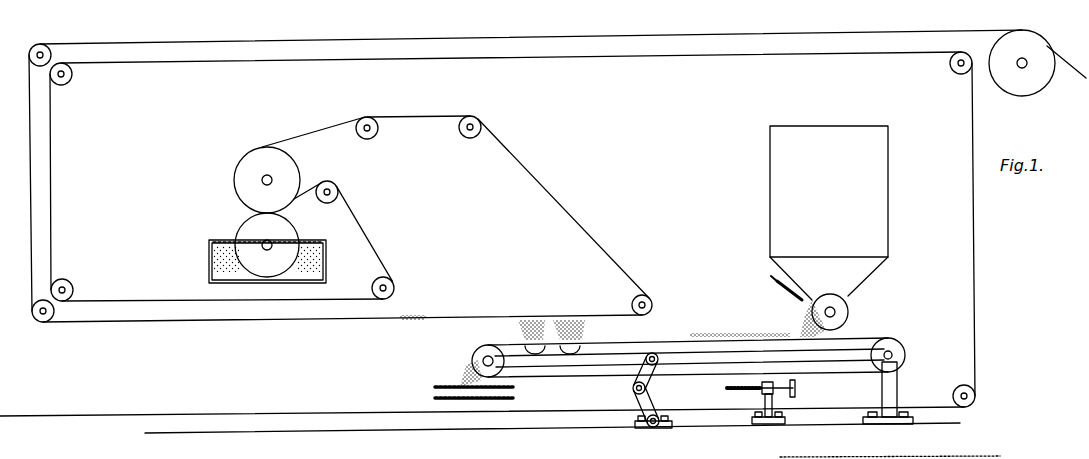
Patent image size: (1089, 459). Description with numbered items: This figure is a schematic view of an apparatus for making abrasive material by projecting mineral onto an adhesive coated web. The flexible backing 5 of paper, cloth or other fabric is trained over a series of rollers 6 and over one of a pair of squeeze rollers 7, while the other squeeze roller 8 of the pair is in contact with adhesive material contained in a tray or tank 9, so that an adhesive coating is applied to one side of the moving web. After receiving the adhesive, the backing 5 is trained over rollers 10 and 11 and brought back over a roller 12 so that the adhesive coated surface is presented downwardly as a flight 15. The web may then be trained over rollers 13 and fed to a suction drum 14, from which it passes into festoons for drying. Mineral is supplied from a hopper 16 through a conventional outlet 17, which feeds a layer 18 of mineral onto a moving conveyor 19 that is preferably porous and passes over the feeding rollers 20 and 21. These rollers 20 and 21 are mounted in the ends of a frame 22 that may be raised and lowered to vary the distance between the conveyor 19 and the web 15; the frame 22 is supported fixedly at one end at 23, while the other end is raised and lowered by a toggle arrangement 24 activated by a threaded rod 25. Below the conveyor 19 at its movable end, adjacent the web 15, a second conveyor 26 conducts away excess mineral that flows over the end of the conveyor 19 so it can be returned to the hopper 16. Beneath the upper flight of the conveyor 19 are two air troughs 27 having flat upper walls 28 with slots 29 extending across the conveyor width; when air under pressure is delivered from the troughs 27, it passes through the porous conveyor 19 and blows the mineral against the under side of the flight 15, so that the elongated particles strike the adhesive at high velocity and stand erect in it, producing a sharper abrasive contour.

The flexible backing 5 is at (433, 115).
The rollers 6 is at (72, 78).
The squeeze roller 7 is at (294, 169).
The squeeze roller 8 is at (248, 225).
The tray or tank 9 is at (210, 255).
The roller 10 is at (367, 117).
The roller 11 is at (470, 138).
The roller 12 is at (652, 305).
The rollers 13 is at (32, 50).
The suction drum 14 is at (1046, 48).
The web flight 15 is at (430, 318).
The hopper 16 is at (880, 196).
The outlet 17 is at (846, 312).
The layer of mineral 18 is at (731, 337).
The conveyor 19 is at (868, 338).
The feeding roller 20 is at (896, 355).
The feeding roller 21 is at (473, 358).
The frame 22 is at (637, 355).
The fixed support 23 is at (898, 387).
The toggle arrangement 24 is at (634, 396).
The threaded rod 25 is at (742, 394).
The second conveyor 26 is at (436, 388).
The air troughs 27 is at (568, 356).
The flat upper walls 28 is at (525, 342).
The slots 29 is at (545, 342).